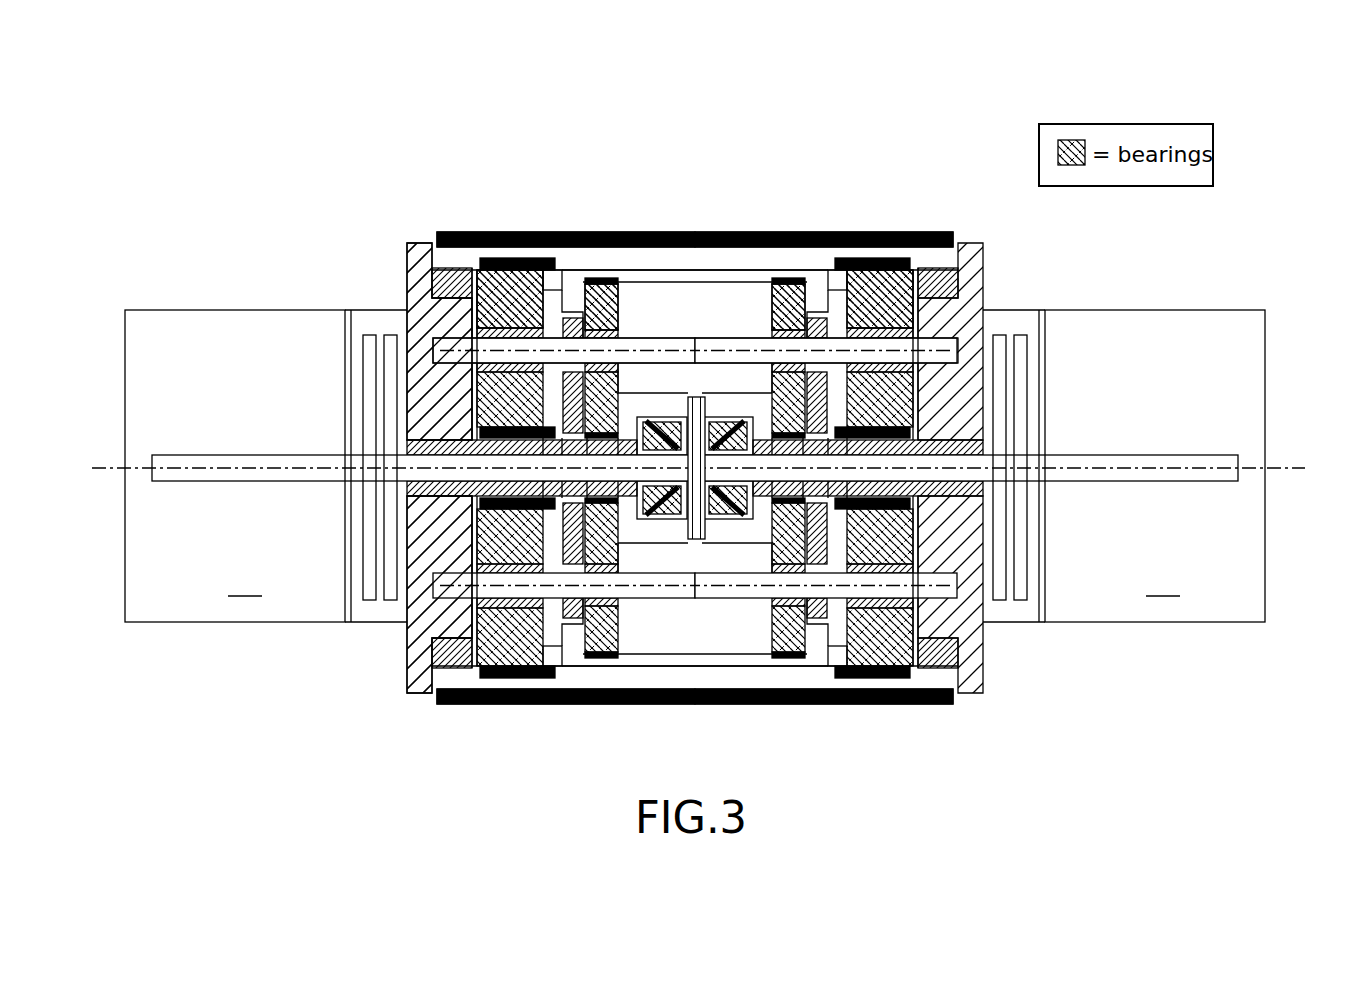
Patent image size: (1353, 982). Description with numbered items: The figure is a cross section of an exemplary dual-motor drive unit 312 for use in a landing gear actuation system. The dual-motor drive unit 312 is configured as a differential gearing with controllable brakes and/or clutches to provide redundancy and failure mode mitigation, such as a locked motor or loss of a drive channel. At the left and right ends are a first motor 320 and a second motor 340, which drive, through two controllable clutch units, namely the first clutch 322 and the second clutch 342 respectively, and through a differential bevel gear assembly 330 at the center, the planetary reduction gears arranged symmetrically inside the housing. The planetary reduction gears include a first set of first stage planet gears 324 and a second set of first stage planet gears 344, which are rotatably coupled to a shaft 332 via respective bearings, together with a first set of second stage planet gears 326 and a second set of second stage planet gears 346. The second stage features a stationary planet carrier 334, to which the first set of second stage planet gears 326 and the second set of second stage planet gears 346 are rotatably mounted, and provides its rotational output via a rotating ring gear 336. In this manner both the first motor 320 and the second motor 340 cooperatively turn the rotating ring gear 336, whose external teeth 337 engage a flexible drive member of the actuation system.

The dual-motor drive unit 312 is at (400, 105).
The first motor 320 is at (521, 206).
The first clutch 322 is at (369, 610).
The first set of first stage planet gears 324 is at (607, 293).
The first set of second stage planet gears 326 is at (507, 284).
The differential bevel gear assembly 330 is at (721, 395).
The shaft 332 is at (668, 340).
The stationary planet carrier 334 is at (408, 262).
The rotating ring gear 336 is at (735, 257).
The external teeth 337 is at (673, 232).
The second motor 340 is at (1124, 466).
The second clutch 342 is at (1021, 610).
The second set of first stage planet gears 344 is at (790, 293).
The second set of second stage planet gears 346 is at (881, 283).